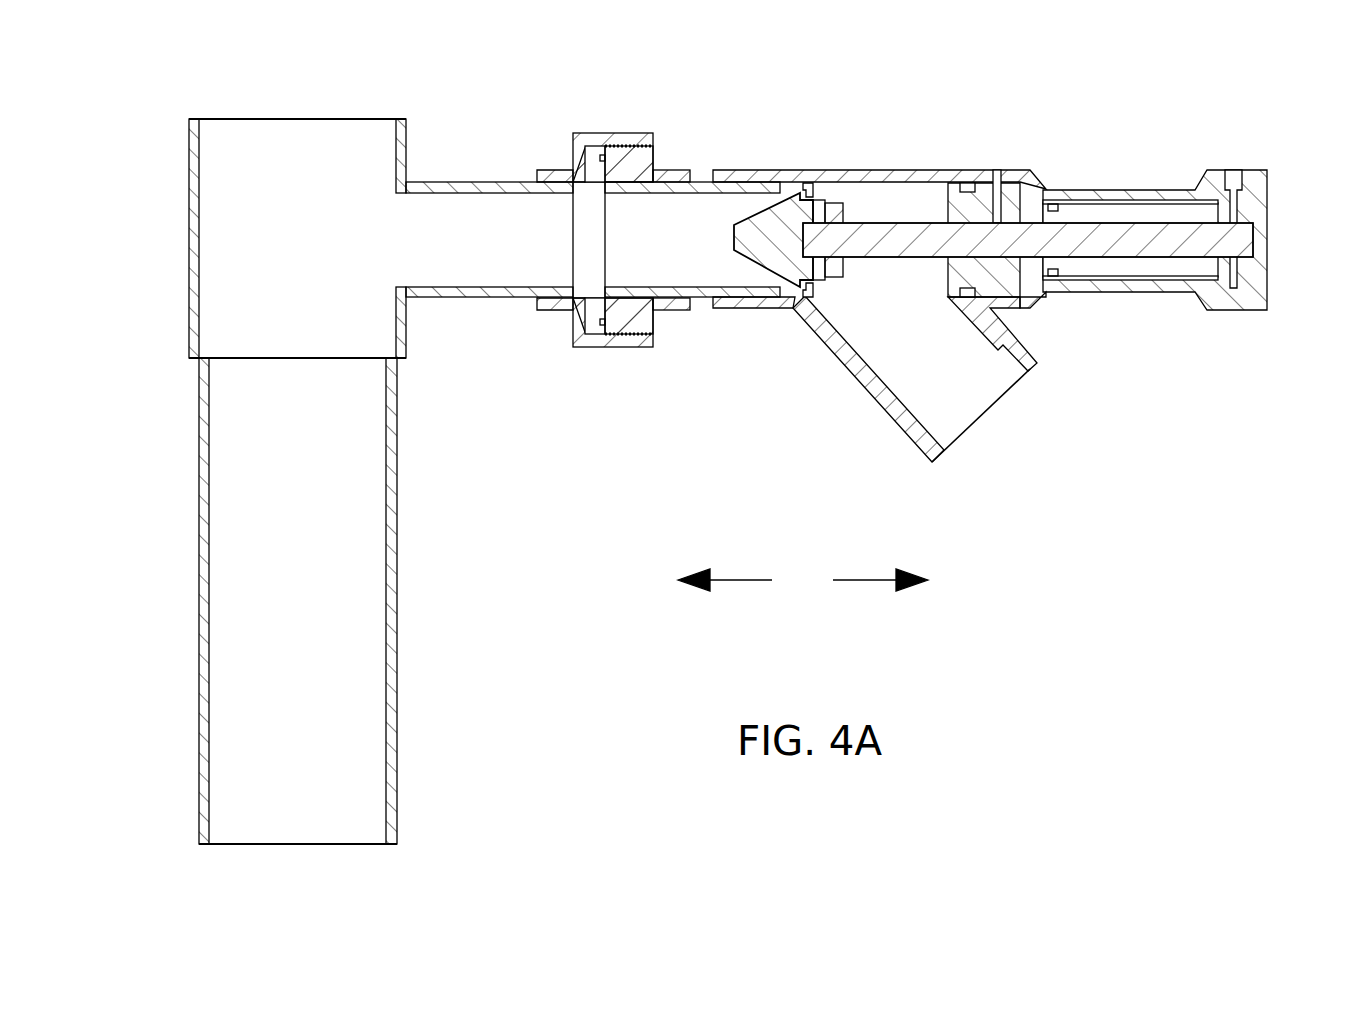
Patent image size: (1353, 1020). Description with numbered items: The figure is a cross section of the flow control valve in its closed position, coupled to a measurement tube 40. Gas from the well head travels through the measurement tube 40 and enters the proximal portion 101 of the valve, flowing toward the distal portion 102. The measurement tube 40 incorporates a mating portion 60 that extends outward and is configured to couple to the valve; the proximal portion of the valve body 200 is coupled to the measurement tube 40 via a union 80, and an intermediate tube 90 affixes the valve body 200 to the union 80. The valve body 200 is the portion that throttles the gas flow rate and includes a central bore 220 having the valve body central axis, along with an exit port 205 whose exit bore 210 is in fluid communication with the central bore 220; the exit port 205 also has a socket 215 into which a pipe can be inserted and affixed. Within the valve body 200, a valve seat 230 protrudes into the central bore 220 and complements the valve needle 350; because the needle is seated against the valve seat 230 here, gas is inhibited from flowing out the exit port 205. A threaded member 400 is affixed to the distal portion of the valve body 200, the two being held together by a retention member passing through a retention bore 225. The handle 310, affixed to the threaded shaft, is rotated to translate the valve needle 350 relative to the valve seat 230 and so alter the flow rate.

The measurement tube 40 is at (178, 514).
The mating portion 60 is at (475, 182).
The union 80 is at (612, 118).
The intermediate tube 90 is at (705, 182).
The valve body 200 is at (829, 158).
The exit port 205 is at (890, 410).
The exit bore 210 is at (953, 385).
The exit port socket 215 is at (933, 440).
The central bore 220 is at (900, 205).
The retention bore 225 is at (1005, 188).
The valve seat 230 is at (805, 295).
The valve needle 350 is at (760, 240).
The threaded member 400 is at (1147, 172).
The handle 310 is at (1283, 230).
The proximal portion 101 is at (725, 575).
The distal portion 102 is at (880, 575).